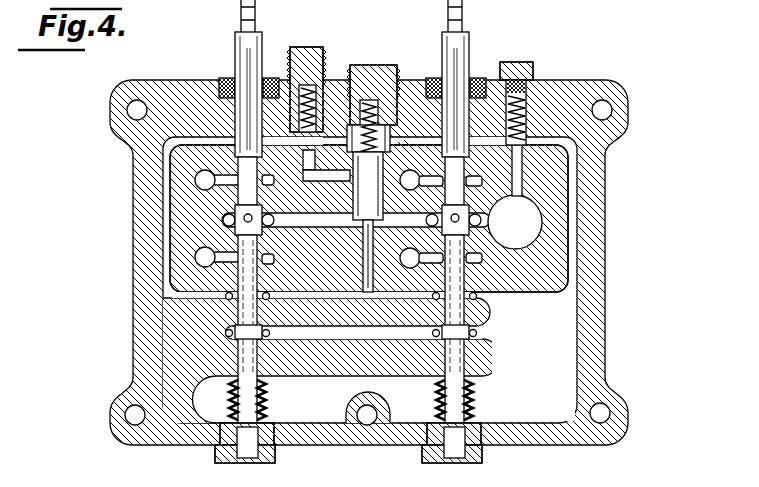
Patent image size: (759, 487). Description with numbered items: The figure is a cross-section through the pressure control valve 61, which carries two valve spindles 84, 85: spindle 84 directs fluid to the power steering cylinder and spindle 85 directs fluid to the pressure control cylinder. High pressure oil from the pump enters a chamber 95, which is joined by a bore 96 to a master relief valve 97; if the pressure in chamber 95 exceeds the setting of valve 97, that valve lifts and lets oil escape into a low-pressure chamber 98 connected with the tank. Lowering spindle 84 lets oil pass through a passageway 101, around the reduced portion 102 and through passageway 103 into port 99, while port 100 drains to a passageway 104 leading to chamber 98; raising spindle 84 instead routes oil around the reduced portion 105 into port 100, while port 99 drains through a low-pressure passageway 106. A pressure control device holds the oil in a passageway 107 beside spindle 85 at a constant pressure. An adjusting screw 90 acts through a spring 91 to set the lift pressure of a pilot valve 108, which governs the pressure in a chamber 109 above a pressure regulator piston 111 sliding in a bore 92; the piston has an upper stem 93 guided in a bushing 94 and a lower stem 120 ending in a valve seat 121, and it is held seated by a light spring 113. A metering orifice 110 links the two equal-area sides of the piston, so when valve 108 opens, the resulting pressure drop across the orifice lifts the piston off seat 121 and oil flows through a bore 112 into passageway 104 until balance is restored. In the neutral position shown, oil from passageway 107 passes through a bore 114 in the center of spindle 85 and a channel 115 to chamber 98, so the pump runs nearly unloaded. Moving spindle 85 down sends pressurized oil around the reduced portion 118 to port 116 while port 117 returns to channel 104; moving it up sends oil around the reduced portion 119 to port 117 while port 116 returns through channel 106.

The pressure control valve 61 is at (604, 252).
The valve spindle 84 is at (468, 45).
The valve spindle 85 is at (262, 45).
The pressure adjusting screw 90 is at (312, 48).
The spring 91 is at (322, 80).
The bore 92 is at (393, 140).
The stem 93 is at (403, 124).
The bushing 94 is at (397, 115).
The chamber 95 is at (530, 211).
The bore 96 is at (522, 168).
The master relief valve 97 is at (528, 103).
The low-pressure chamber 98 is at (552, 356).
The port 99 is at (406, 186).
The port 100 is at (406, 268).
The passageway 101 is at (470, 260).
The reduced portion 102 is at (469, 183).
The passageway 103 is at (462, 162).
The passageway 104 is at (316, 296).
The reduced portion 105 is at (468, 272).
The low-pressure passageway 106 is at (286, 132).
The passageway 107 is at (276, 226).
The pilot valve 108 is at (300, 165).
The chamber 109 is at (293, 181).
The metering orifice 110 is at (301, 202).
The pressure regulator piston 111 is at (347, 195).
The bore 112 is at (356, 268).
The spring 113 is at (356, 86).
The bore 114 is at (261, 273).
The channel 115 is at (313, 334).
The port 116 is at (206, 172).
The port 117 is at (207, 247).
The reduced portion 118 is at (228, 197).
The reduced portion 119 is at (230, 278).
The stem 120 is at (335, 241).
The valve seat 121 is at (413, 247).